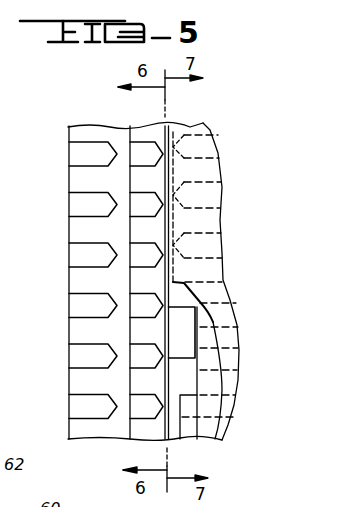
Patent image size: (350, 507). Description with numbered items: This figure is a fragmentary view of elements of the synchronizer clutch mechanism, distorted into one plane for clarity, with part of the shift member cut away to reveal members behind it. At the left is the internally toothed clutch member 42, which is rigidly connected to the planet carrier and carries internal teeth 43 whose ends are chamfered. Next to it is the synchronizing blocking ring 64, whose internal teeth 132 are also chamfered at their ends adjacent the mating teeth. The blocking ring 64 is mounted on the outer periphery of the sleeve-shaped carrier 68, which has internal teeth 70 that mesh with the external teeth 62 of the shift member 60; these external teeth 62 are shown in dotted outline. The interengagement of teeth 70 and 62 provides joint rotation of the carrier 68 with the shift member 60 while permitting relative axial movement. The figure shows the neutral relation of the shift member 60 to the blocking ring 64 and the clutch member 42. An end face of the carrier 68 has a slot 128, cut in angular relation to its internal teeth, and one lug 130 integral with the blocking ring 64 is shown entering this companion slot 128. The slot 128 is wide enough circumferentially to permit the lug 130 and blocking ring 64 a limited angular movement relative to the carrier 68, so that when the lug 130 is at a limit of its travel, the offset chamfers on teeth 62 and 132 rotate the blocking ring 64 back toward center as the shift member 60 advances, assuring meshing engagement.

The clutch member 42 is at (72, 180).
The internal teeth 43 is at (92, 319).
The synchronizing blocking ring 64 is at (128, 225).
The internal teeth of the blocking ring 132 is at (147, 267).
The external teeth 62 is at (203, 157).
The internal teeth of the carrier 70 is at (197, 177).
The sleeve-shaped carrier 68 is at (193, 300).
The shift member 60 is at (213, 322).
The lug 130 is at (180, 348).
The slot 128 is at (190, 395).